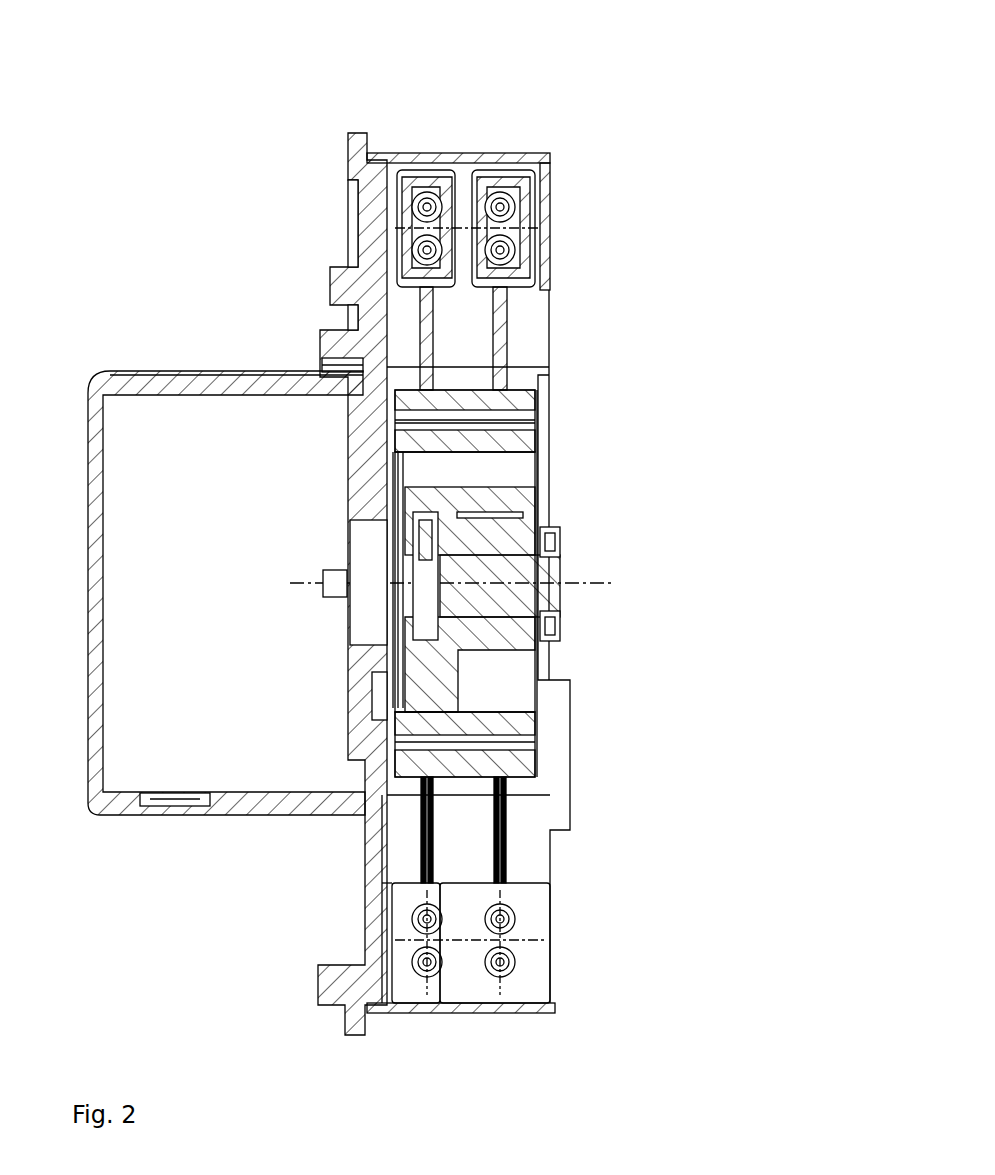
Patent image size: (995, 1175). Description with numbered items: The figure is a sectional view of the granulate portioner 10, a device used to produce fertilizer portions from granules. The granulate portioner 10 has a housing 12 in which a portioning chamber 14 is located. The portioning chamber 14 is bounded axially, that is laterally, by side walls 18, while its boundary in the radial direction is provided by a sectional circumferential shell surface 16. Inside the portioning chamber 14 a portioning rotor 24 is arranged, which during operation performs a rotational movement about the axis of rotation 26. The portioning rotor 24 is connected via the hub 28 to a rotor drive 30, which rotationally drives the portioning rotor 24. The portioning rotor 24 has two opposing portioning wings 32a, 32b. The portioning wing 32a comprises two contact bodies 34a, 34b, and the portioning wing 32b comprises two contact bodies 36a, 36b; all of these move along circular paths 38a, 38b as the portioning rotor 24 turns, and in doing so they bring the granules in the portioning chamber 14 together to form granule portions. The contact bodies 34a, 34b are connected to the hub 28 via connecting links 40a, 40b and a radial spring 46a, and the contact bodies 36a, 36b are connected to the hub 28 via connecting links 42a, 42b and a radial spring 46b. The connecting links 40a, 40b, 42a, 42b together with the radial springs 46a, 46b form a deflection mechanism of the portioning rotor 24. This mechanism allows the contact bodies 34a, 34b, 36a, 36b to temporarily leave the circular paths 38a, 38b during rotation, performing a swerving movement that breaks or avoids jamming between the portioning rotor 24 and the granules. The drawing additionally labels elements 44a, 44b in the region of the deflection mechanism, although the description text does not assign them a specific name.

The granulate portioner 10 is at (602, 80).
The housing 12 is at (375, 224).
The portioning chamber 14 is at (528, 856).
The shell surface 16 is at (533, 333).
The side walls 18 is at (385, 925).
The portioning rotor 24 is at (565, 660).
The axis of rotation 26 is at (573, 582).
The hub 28 is at (515, 548).
The rotor drive 30 is at (235, 773).
The portioning wing 32a is at (520, 311).
The portioning wing 32b is at (520, 868).
The contact body 34a is at (428, 175).
The contact body 34b is at (530, 247).
The contact body 36a is at (403, 973).
The contact body 36b is at (522, 990).
The circular path 38a is at (476, 187).
The circular path 38b is at (540, 220).
The connecting link 40a is at (425, 318).
The connecting link 40b is at (510, 350).
The connecting link 42a is at (425, 830).
The connecting link 42b is at (540, 790).
The first stator winding 44a is at (572, 417).
The second stator winding 44b is at (551, 726).
The radial spring 46a is at (465, 421).
The radial spring 46b is at (533, 735).